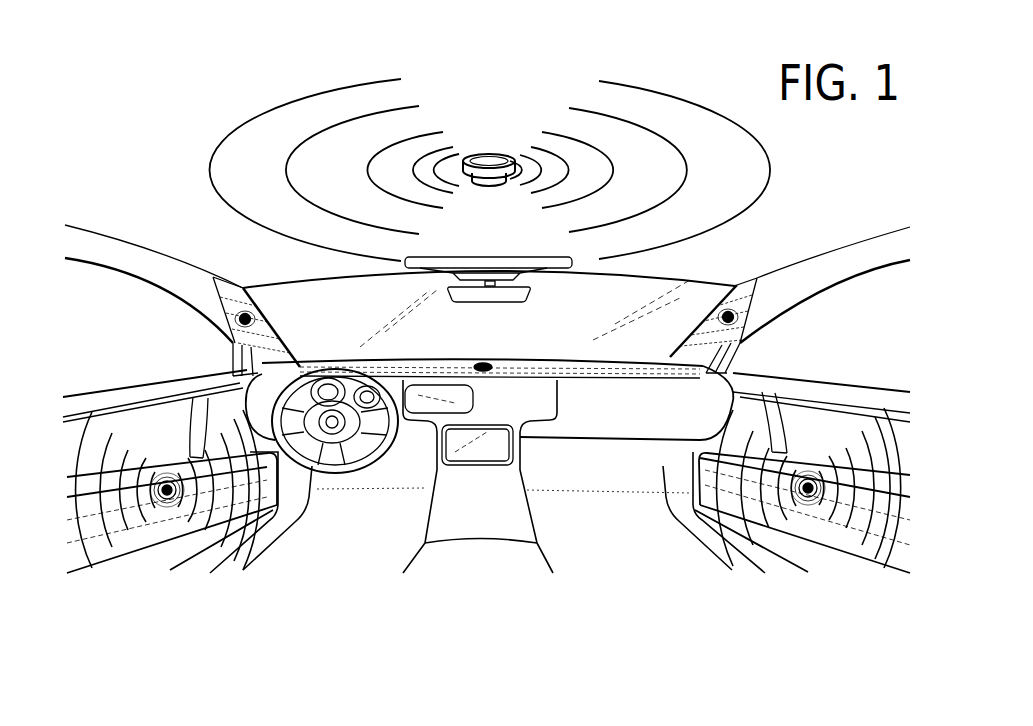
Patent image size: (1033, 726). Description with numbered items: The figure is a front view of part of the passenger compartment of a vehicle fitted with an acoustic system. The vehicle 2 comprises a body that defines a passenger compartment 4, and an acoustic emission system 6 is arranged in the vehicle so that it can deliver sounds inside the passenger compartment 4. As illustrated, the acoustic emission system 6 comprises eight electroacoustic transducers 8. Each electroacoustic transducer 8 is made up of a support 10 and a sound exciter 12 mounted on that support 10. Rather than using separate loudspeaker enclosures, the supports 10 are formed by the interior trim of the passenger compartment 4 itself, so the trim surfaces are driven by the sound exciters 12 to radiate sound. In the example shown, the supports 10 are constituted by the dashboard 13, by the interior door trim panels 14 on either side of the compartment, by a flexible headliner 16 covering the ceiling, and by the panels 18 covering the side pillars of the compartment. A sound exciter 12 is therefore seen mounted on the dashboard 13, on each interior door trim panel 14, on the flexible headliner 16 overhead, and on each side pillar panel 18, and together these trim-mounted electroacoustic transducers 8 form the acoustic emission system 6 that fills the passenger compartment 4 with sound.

The vehicle 2 is at (303, 614).
The passenger compartment 4 is at (333, 552).
The acoustic emission system 6 is at (433, 580).
The electroacoustic transducer 8 is at (489, 331).
The support 10 is at (487, 134).
The sound exciter 12 is at (488, 158).
The dashboard 13 is at (368, 365).
The interior door trim panel 14 is at (103, 450).
The flexible headliner 16 is at (265, 140).
The panel covering side pillar 18 is at (263, 339).